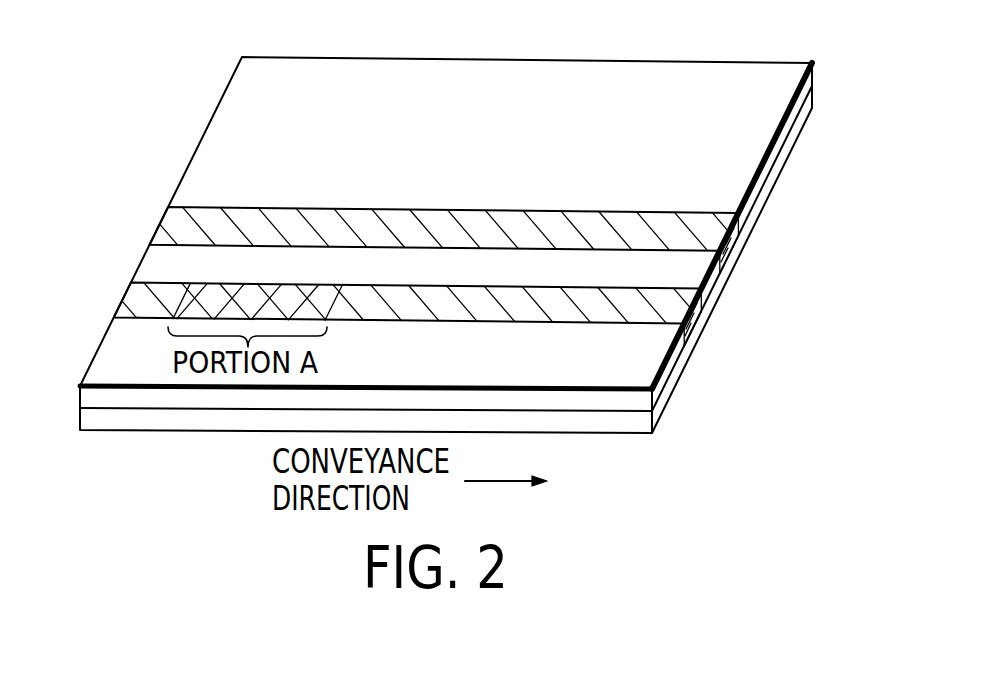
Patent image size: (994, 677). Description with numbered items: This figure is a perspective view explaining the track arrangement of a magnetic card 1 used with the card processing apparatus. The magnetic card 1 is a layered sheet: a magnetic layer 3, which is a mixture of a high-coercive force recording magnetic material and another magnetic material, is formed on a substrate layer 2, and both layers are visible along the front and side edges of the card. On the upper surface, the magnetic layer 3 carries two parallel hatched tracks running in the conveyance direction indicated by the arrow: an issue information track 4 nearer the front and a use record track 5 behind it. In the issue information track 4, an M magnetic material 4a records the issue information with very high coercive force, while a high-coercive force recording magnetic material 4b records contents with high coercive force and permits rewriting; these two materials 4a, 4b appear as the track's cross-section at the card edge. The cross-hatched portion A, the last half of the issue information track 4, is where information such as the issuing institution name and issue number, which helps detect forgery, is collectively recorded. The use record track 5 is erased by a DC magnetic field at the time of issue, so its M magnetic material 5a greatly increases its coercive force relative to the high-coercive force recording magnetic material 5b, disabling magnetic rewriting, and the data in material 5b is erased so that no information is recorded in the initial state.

The magnetic card 1 is at (112, 357).
The substrate layer 2 is at (812, 107).
The magnetic layer 3 is at (808, 88).
The issue information track 4 is at (460, 317).
The use record track 5 is at (472, 213).
The M magnetic material 4a is at (761, 318).
The high-coercive force recording magnetic material 4b is at (688, 318).
The M magnetic material 5a is at (797, 243).
The high-coercive force recording magnetic material 5b is at (737, 240).